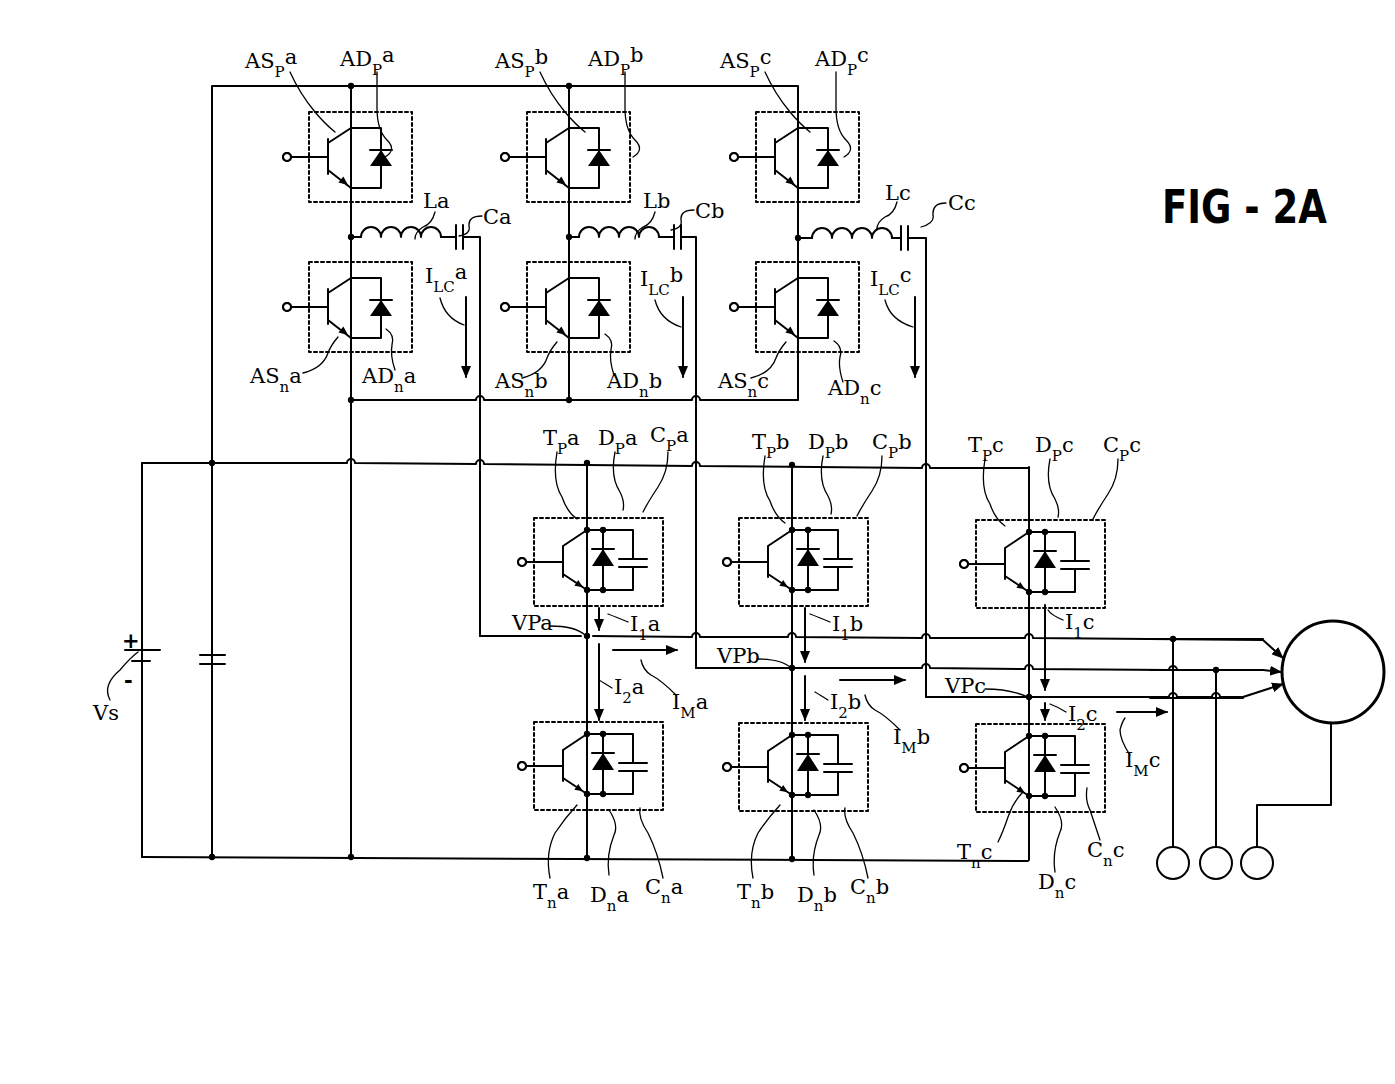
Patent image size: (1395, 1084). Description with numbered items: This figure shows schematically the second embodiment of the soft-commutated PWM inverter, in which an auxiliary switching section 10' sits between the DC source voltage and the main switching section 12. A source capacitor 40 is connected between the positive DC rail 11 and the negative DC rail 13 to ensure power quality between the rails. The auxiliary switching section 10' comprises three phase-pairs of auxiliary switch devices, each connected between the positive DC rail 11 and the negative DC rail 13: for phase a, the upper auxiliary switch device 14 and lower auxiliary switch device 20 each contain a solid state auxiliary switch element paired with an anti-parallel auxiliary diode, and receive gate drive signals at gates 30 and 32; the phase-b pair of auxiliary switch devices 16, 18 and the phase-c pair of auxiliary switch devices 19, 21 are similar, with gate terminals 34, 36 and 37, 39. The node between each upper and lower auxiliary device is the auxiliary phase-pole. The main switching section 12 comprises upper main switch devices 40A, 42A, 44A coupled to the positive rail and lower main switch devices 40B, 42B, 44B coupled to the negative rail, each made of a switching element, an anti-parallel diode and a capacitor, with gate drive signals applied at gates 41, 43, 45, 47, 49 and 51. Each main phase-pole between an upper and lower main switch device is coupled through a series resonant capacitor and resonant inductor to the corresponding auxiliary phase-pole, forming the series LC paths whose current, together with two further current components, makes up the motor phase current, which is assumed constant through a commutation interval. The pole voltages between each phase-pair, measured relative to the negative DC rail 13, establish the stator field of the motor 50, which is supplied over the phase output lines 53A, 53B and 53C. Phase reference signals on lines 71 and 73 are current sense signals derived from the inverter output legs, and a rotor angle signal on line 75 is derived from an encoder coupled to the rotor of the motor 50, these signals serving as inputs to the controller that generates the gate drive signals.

The auxiliary switching section 10' is at (458, 468).
The positive DC rail 11 is at (180, 463).
The main switching section 12 is at (1137, 418).
The negative DC rail 13 is at (177, 857).
The auxiliary switch device 14 is at (308, 195).
The auxiliary switch device 16 is at (526, 126).
The auxiliary switch device 18 is at (540, 248).
The auxiliary switch device 19 is at (757, 133).
The auxiliary switch device 20 is at (309, 278).
The auxiliary switch device 21 is at (770, 265).
The gate 30 is at (286, 156).
The gate 32 is at (285, 307).
The gate terminal 34 is at (504, 157).
The gate terminal 36 is at (505, 303).
The gate terminal 37 is at (730, 154).
The gate terminal 39 is at (730, 303).
The source capacitor 40 is at (217, 656).
The main switch device 40A is at (534, 520).
The main switch device 40B is at (536, 785).
The gate 41 is at (518, 563).
The main switch device 42A is at (754, 520).
The main switch device 42B is at (740, 797).
The gate 43 is at (732, 560).
The main switch device 44A is at (991, 520).
The main switch device 44B is at (977, 787).
The gate 45 is at (968, 562).
The gate 47 is at (523, 767).
The gate 49 is at (725, 768).
The motor 50 is at (1334, 620).
The gate 51 is at (962, 770).
The phase output line 53A is at (1192, 639).
The phase output line 53B is at (1240, 669).
The phase output line 53C is at (1241, 698).
The phase reference signal line 71 is at (1216, 781).
The phase reference signal line 73 is at (1173, 801).
The rotor angle signal line 75 is at (1330, 781).